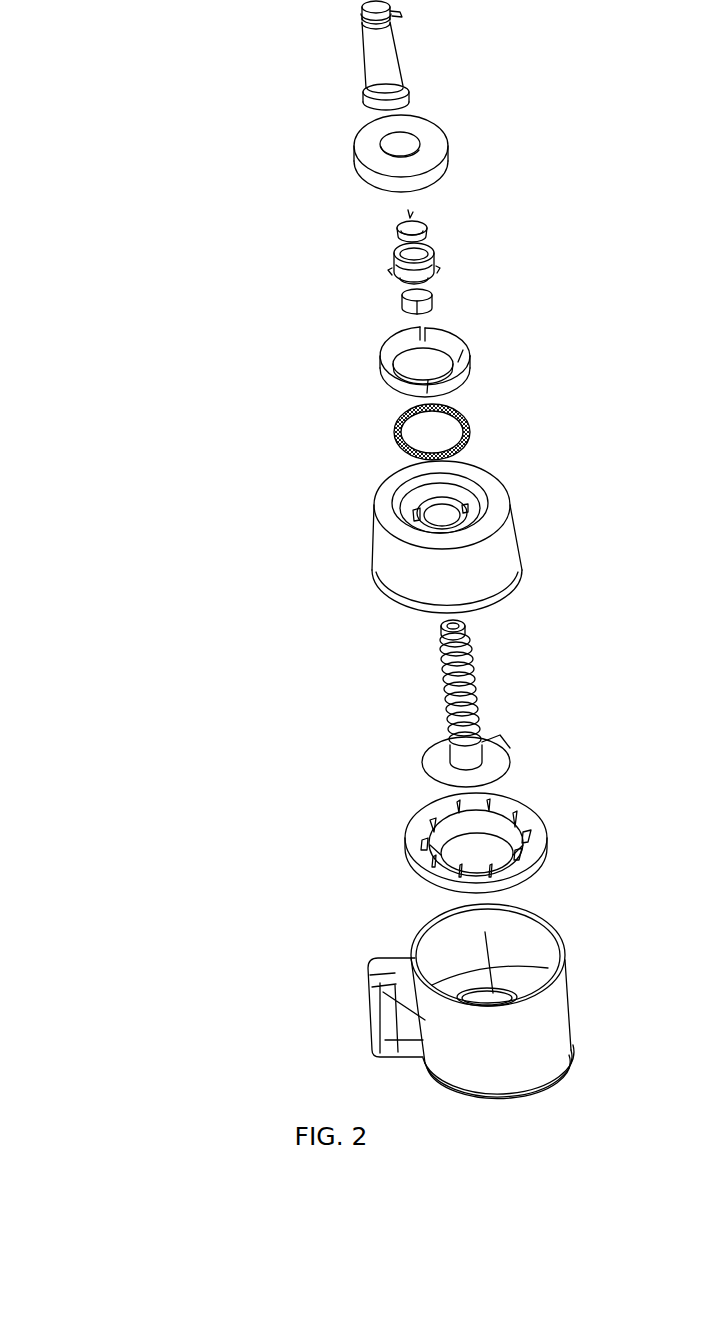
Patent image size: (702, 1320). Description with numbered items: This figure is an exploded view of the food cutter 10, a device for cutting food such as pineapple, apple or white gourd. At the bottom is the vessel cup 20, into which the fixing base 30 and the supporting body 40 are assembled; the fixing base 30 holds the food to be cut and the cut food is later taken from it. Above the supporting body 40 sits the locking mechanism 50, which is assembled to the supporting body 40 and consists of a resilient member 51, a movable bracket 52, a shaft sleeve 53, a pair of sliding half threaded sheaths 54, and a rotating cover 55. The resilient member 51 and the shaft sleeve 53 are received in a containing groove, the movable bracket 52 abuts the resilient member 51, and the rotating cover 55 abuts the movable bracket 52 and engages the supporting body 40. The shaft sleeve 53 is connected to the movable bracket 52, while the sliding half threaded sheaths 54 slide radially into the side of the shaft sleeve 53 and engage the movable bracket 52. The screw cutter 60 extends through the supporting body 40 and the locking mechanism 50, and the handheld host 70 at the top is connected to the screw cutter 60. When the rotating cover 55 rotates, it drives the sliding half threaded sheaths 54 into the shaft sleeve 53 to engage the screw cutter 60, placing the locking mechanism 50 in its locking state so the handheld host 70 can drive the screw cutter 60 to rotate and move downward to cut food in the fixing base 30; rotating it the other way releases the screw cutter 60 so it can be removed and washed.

The food cutter 10 is at (68, 57).
The vessel cup 20 is at (400, 1023).
The fixing base 30 is at (408, 853).
The supporting body 40 is at (372, 552).
The locking mechanism 50 is at (190, 190).
The resilient member 51 is at (393, 438).
The movable bracket 52 is at (378, 373).
The shaft sleeve 53 is at (385, 250).
The sliding half threaded sheaths 54 is at (397, 302).
The rotating cover 55 is at (370, 152).
The screw cutter 60 is at (445, 703).
The handheld host 70 is at (378, 70).